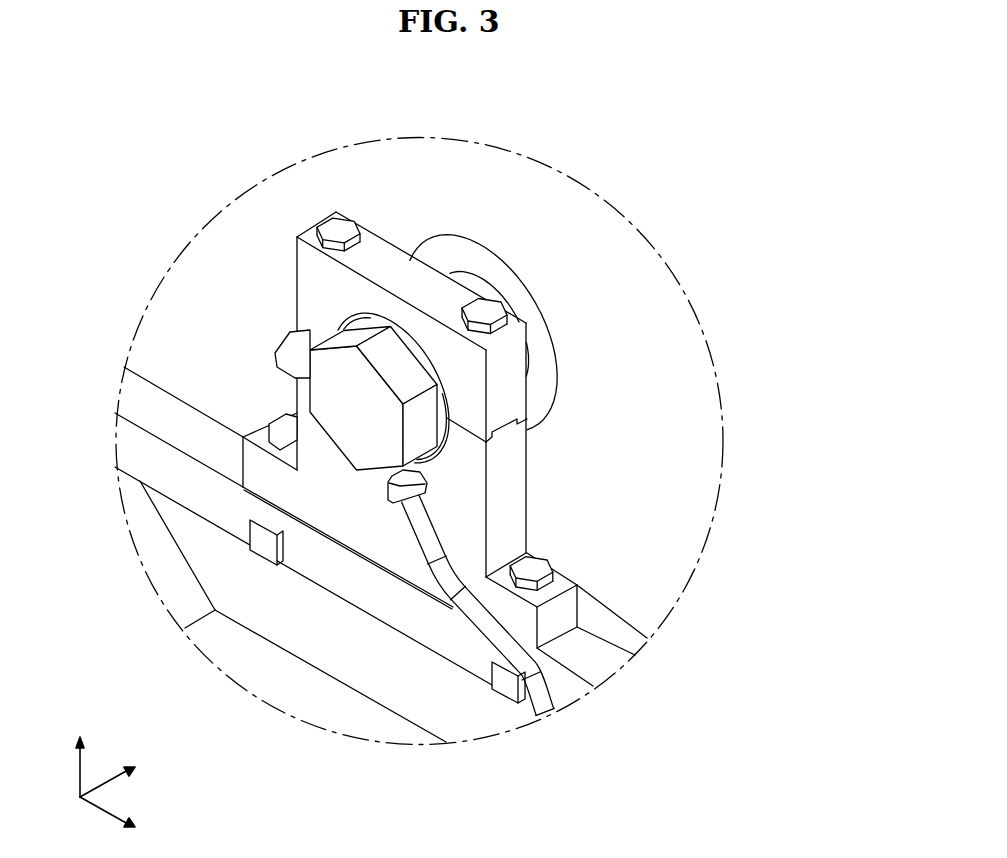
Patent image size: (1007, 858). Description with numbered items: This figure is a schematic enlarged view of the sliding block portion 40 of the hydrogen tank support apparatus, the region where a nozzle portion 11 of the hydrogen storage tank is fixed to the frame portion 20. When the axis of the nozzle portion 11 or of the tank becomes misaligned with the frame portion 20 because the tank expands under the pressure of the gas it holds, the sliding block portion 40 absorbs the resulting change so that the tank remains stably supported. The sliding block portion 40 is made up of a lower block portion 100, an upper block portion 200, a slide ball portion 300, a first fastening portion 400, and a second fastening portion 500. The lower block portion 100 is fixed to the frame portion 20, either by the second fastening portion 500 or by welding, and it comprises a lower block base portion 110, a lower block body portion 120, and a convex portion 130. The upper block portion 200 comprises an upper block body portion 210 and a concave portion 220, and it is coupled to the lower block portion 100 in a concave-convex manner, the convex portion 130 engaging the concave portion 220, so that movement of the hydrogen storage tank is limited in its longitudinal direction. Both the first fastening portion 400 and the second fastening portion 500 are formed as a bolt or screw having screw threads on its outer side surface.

The sliding block portion 40 is at (449, 455).
The frame portion 20 is at (172, 470).
The nozzle portion 11 is at (338, 388).
The lower block portion 100 is at (667, 543).
The lower block base portion 110 is at (618, 615).
The lower block body portion 120 is at (503, 490).
The convex portion 130 is at (500, 410).
The upper block portion 200 is at (534, 349).
The upper block body portion 210 is at (502, 362).
The concave portion 220 is at (500, 410).
The slide ball portion 300 is at (372, 314).
The first fastening portion 400 is at (337, 227).
The second fastening portion 500 is at (527, 583).